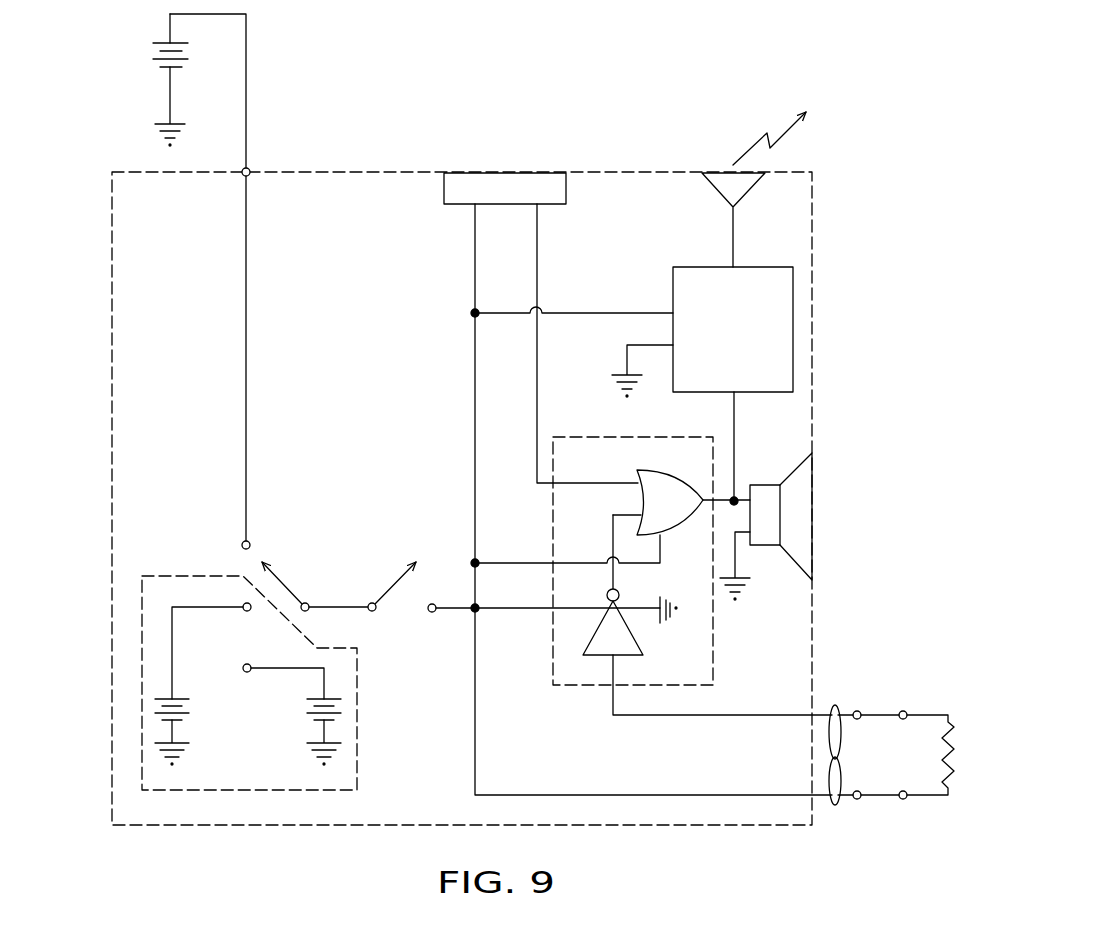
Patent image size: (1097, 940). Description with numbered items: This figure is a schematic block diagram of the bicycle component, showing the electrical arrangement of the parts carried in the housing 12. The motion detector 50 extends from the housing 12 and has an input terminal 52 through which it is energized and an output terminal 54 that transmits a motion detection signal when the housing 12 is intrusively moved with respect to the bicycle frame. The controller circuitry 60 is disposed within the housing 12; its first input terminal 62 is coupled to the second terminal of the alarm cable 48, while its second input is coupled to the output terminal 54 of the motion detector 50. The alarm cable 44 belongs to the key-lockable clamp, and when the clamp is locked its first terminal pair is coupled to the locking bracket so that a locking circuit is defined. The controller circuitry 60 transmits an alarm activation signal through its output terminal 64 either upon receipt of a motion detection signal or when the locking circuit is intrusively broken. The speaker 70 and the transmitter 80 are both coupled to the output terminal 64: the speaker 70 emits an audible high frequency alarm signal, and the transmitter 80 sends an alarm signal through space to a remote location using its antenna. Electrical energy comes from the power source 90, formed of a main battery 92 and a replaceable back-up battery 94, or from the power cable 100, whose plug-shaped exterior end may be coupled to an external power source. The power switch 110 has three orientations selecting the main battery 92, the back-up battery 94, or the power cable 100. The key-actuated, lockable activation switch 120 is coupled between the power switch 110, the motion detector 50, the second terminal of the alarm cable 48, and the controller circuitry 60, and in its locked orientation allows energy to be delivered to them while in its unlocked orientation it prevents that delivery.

The housing 12 is at (232, 825).
The alarm cable 44 is at (940, 762).
The second terminal of the alarm cable 48 is at (835, 805).
The motion detector 50 is at (520, 187).
The input terminal of the motion detector 52 is at (470, 207).
The output terminal of the motion detector 54 is at (540, 207).
The controller circuitry 60 is at (553, 537).
The first input terminal of the controller circuitry 62 is at (608, 698).
The output terminal of the controller circuitry 64 is at (715, 497).
The speaker 70 is at (797, 512).
The transmitter 80 is at (753, 347).
The power source 90 is at (142, 643).
The main battery 92 is at (345, 708).
The back-up battery 94 is at (150, 707).
The power cable 100 is at (246, 362).
The power switch 110 is at (287, 575).
The activation switch 120 is at (150, 60).